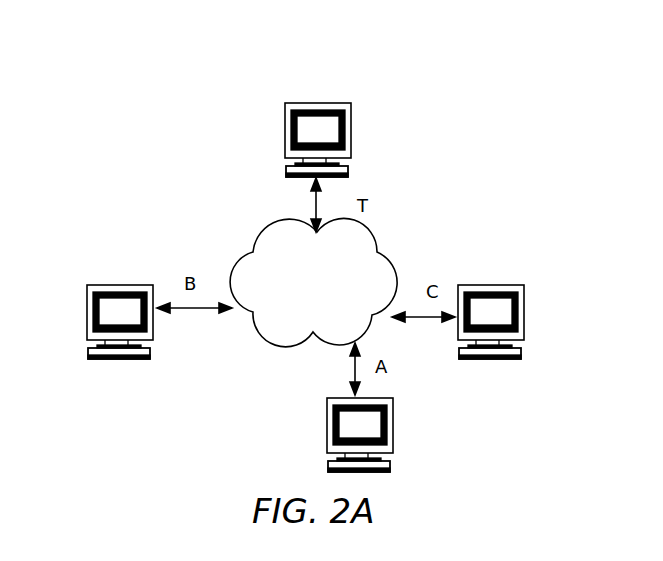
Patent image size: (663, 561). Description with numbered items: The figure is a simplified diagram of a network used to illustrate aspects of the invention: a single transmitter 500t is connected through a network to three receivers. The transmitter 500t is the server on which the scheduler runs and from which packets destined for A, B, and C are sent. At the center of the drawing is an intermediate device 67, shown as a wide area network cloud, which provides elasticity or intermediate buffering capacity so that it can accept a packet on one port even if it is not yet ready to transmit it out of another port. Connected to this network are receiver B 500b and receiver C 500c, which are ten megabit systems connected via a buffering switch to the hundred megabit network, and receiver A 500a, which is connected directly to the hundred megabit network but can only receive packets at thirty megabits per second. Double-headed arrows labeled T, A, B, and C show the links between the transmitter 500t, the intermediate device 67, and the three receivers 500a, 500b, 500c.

The intermediate device 67 is at (387, 253).
The transmitter 500t is at (287, 101).
The receiver B 500b is at (90, 283).
The receiver C 500c is at (528, 313).
The receiver A 500a is at (437, 415).